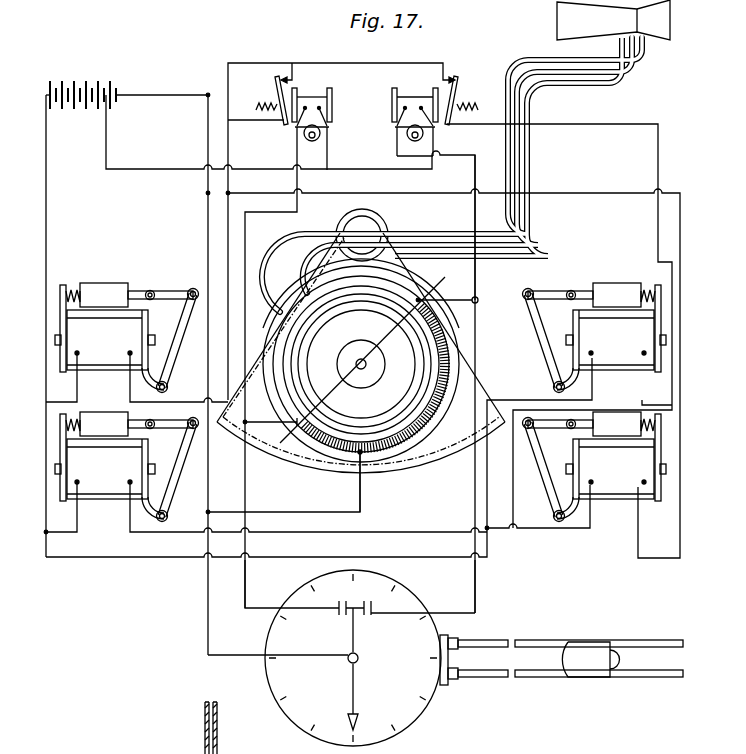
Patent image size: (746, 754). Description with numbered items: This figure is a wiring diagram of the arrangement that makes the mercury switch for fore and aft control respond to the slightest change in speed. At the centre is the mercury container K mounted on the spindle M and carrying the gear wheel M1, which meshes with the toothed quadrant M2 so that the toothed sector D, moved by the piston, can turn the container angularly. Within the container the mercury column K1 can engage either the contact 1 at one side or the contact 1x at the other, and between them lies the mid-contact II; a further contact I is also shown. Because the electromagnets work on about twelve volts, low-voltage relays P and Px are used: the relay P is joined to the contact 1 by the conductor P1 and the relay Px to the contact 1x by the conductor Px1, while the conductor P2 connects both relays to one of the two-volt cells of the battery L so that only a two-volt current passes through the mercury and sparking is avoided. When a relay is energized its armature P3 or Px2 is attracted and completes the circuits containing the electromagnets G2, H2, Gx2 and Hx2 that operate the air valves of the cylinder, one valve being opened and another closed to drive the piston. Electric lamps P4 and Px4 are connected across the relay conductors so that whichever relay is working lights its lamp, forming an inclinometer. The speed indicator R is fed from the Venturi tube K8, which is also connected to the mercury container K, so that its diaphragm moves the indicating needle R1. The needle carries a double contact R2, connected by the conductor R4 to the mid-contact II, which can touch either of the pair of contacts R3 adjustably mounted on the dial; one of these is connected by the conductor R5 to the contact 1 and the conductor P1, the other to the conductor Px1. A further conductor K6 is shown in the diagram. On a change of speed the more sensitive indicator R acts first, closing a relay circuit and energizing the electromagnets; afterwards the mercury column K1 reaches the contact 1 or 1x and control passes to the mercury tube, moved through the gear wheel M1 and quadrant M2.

The battery L is at (127, 86).
The relay P is at (311, 103).
The conductor P1 is at (246, 232).
The conductor P2 is at (354, 170).
The relay armature P3 is at (341, 94).
The electric lamp P4 is at (304, 133).
The relay Px is at (411, 100).
The conductor Px1 is at (476, 213).
The relay armature Px2 is at (471, 99).
The electric lamp Px4 is at (407, 133).
The mercury container K is at (435, 337).
The mercury column K1 is at (455, 358).
The conductor K6 is at (476, 583).
The Venturi tube K8 is at (466, 156).
The spindle M is at (368, 230).
The gear wheel M1 is at (361, 364).
The toothed quadrant M2 is at (404, 268).
The contact 1 is at (306, 403).
The contact 1x is at (362, 360).
The contact I is at (270, 422).
The mid-contact II is at (343, 482).
The toothed sector D is at (486, 393).
The electromagnet G2 is at (127, 338).
The electromagnet H2 is at (127, 467).
The electromagnet Gx2 is at (595, 338).
The electromagnet Hx2 is at (595, 467).
The speed indicator instrument R is at (353, 658).
The indicating needle R1 is at (357, 689).
The double contact R2 is at (406, 626).
The dial contact R3 is at (356, 630).
The conductor R4 is at (250, 656).
The conductor R5 is at (246, 575).